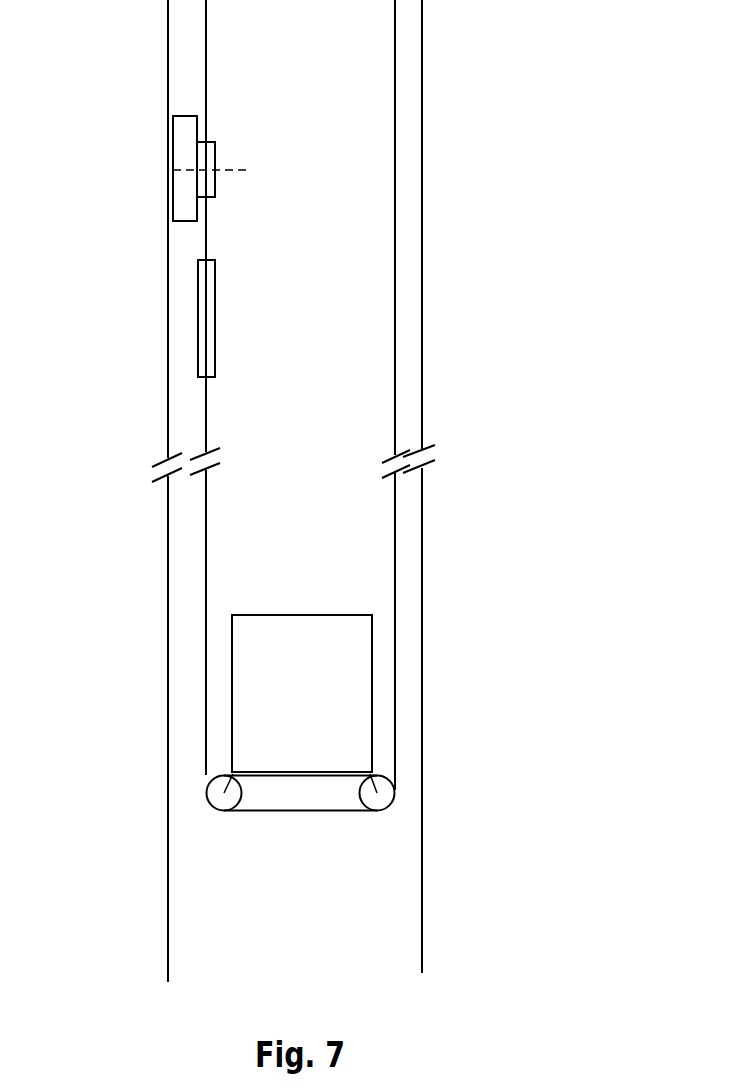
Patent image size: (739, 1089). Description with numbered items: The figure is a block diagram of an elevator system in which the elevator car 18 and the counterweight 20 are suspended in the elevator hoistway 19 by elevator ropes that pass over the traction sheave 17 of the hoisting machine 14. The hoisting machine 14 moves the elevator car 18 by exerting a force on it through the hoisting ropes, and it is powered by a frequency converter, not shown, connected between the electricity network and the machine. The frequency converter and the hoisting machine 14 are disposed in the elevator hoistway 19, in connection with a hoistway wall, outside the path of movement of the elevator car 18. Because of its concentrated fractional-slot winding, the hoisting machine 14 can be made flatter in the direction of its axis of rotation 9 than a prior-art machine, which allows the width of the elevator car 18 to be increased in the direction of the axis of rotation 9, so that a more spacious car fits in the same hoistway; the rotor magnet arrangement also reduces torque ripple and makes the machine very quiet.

The hoisting machine 14 is at (162, 170).
The traction sheave 17 is at (215, 143).
The axis of rotation 9 is at (238, 169).
The counterweight 20 is at (215, 325).
The elevator hoistway 19 is at (323, 544).
The elevator car 18 is at (317, 708).